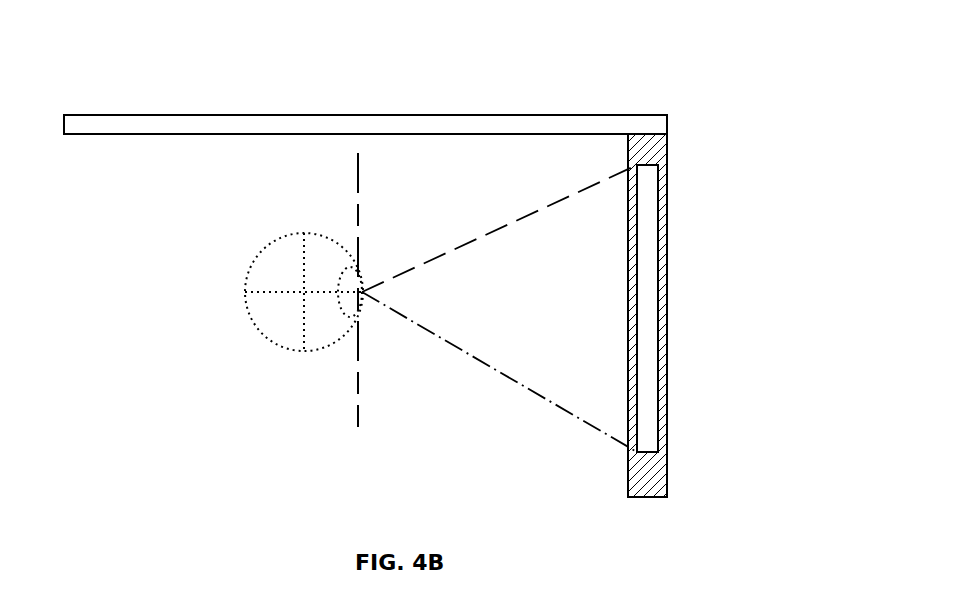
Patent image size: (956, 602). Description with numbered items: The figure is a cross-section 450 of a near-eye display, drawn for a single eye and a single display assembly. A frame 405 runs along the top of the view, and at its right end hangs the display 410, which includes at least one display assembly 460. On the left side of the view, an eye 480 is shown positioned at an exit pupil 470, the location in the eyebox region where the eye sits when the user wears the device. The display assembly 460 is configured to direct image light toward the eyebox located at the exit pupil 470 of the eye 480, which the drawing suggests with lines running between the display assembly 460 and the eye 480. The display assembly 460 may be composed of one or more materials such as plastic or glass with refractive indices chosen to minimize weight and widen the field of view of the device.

The cross-section 450 is at (134, 28).
The frame 405 is at (557, 115).
The display assembly 460 is at (645, 223).
The display 410 is at (667, 403).
The eye 480 is at (277, 242).
The exit pupil 470 is at (357, 367).